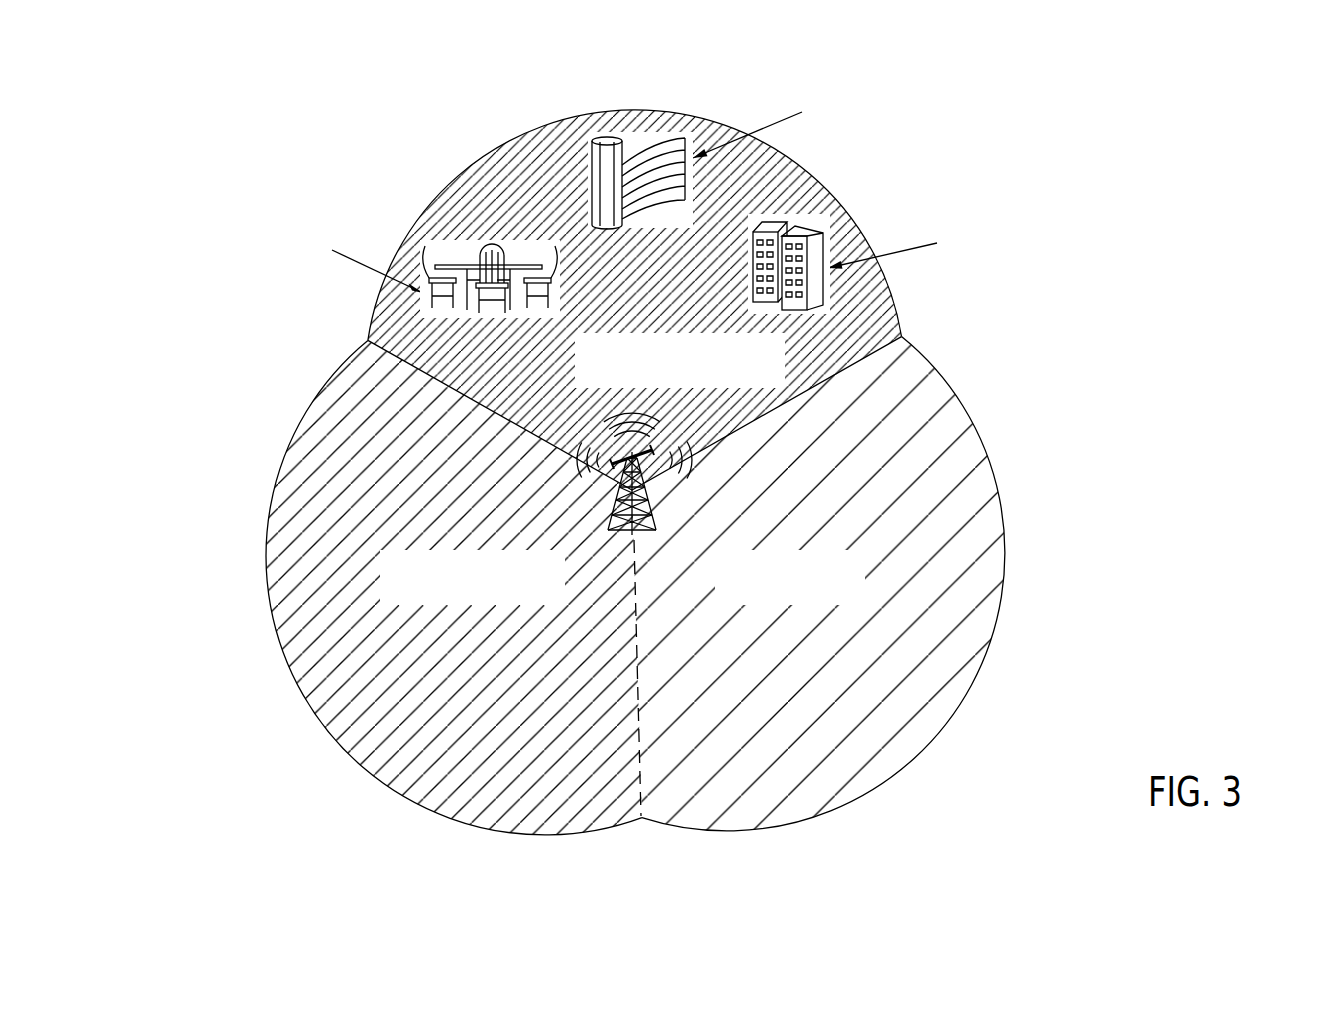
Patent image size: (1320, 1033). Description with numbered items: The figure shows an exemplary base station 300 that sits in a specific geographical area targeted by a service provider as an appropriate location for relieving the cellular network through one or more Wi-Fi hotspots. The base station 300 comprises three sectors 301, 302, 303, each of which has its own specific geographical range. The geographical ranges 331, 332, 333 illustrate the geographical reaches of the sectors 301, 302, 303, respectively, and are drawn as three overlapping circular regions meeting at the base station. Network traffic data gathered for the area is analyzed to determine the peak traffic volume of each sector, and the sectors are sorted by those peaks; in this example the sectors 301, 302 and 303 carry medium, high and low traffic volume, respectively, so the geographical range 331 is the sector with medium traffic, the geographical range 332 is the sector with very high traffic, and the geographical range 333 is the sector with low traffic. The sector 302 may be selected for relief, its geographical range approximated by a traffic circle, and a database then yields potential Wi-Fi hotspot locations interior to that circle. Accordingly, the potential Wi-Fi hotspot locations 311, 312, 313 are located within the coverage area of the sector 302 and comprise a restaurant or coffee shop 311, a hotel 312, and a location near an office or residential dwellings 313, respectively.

The base station 300 is at (1298, 79).
The sector 301 is at (586, 472).
The sector 302 is at (612, 414).
The sector 303 is at (692, 470).
The restaurant or coffee shop 311 is at (453, 262).
The hotel 312 is at (678, 137).
The location near an office or residential dwellings 313 is at (823, 228).
The geographical range 331 is at (267, 526).
The geographical range 332 is at (508, 143).
The geographical range 333 is at (1006, 518).